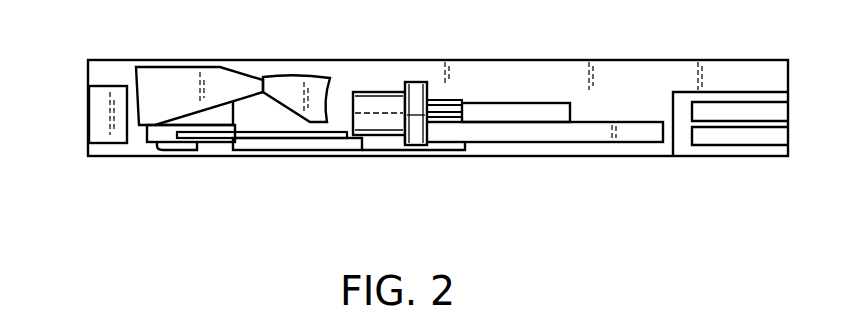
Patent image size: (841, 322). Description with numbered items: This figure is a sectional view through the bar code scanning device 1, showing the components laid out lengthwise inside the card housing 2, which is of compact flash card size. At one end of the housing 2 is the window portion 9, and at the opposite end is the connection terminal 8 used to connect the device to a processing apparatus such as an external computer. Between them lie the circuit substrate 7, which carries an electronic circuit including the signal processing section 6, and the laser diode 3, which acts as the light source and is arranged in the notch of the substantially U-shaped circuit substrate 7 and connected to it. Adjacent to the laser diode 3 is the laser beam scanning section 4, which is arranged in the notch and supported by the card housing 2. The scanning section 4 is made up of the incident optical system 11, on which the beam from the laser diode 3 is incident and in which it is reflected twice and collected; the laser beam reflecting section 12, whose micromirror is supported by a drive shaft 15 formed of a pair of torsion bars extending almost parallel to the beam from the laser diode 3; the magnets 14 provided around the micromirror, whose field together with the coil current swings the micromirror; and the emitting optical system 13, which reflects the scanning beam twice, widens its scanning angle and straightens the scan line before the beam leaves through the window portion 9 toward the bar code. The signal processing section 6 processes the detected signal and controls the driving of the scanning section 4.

The bar code scanning device 1 is at (460, 165).
The card housing 2 is at (728, 78).
The laser diode 3 is at (388, 110).
The laser beam scanning section 4 is at (252, 67).
The signal processing section 6 is at (522, 118).
The circuit substrate 7 is at (558, 134).
The connection terminal 8 is at (730, 138).
The window portion 9 is at (107, 110).
The incident optical system 11 is at (300, 90).
The laser beam reflecting section 12 is at (268, 139).
The emitting optical system 13 is at (167, 82).
The magnet 14 is at (340, 88).
The drive shaft 15 is at (212, 142).